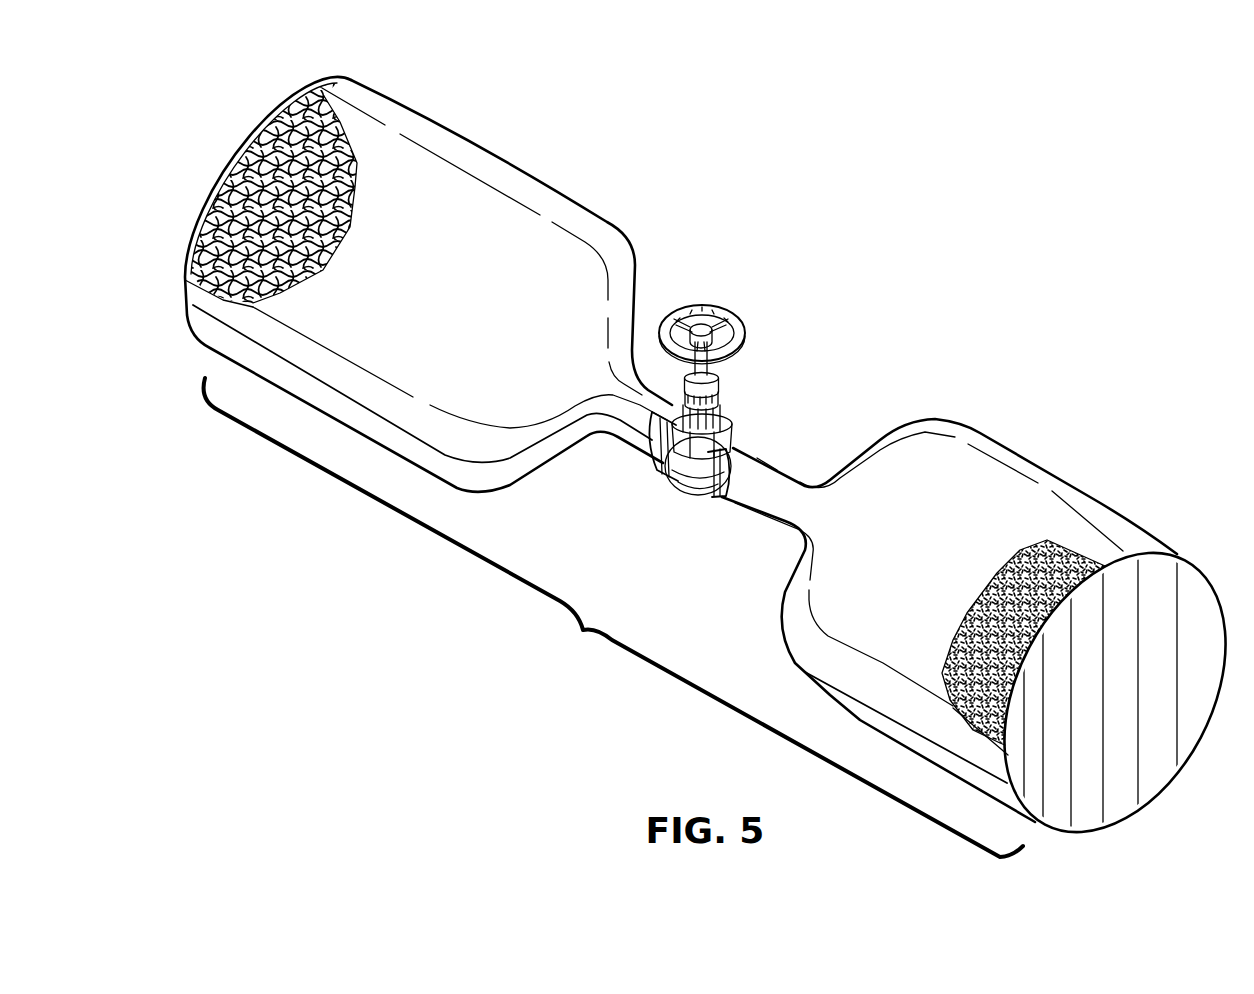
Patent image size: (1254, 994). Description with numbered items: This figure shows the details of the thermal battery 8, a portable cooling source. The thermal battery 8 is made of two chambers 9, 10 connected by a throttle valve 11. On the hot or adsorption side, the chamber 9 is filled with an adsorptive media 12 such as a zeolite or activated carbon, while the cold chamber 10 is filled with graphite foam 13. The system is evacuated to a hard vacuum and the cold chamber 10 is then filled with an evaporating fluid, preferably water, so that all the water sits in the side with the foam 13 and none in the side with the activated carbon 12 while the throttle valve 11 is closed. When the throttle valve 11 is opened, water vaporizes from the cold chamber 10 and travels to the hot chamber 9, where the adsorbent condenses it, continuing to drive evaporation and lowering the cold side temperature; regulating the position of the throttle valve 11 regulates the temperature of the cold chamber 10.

The thermal battery 8 is at (613, 617).
The hot chamber 9 is at (548, 186).
The cold chamber 10 is at (992, 440).
The throttle valve 11 is at (747, 326).
The adsorptive media 12 is at (213, 212).
The graphite foam 13 is at (1068, 558).